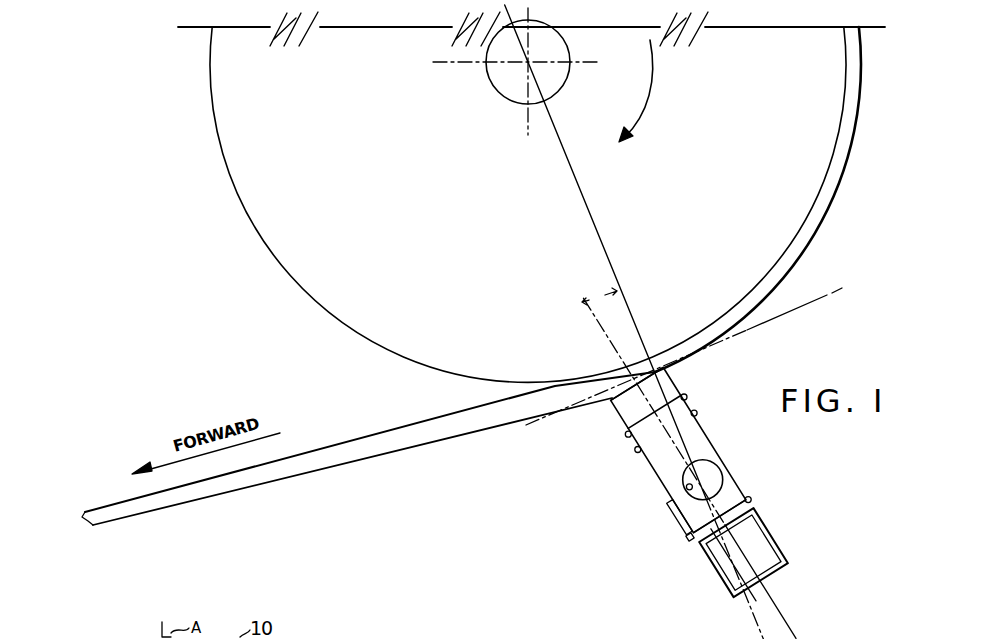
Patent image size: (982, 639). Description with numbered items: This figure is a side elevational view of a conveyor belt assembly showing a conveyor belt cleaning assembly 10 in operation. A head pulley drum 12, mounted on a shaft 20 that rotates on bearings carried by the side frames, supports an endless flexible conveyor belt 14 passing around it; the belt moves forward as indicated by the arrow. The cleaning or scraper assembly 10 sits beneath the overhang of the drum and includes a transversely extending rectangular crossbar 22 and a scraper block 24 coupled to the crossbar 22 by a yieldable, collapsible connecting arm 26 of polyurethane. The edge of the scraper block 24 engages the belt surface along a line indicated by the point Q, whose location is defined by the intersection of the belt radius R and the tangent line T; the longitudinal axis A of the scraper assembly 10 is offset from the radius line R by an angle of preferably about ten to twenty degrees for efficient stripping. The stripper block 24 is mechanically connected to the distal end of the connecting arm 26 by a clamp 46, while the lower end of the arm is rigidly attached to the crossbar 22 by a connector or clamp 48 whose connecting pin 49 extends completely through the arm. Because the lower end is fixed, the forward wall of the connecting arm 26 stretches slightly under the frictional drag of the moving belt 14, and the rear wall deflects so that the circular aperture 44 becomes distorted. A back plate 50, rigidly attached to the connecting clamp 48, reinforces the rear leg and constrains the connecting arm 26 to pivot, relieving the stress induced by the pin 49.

The conveyor belt cleaning assembly 10 is at (663, 468).
The head pulley drum 12 is at (223, 158).
The conveyor belt 14 is at (238, 483).
The shaft 20 is at (498, 101).
The crossbar 22 is at (770, 530).
The scraper block 24 is at (628, 417).
The connecting arm 26 is at (702, 448).
The circular aperture 44 is at (688, 489).
The clamp 46 is at (698, 414).
The connector 48 is at (702, 532).
The connecting pin 49 is at (634, 452).
The back plate 50 is at (684, 521).
The belt radius R is at (603, 218).
The tangent line T is at (806, 302).
The point of engagement Q is at (660, 372).
The longitudinal axis A is at (794, 628).